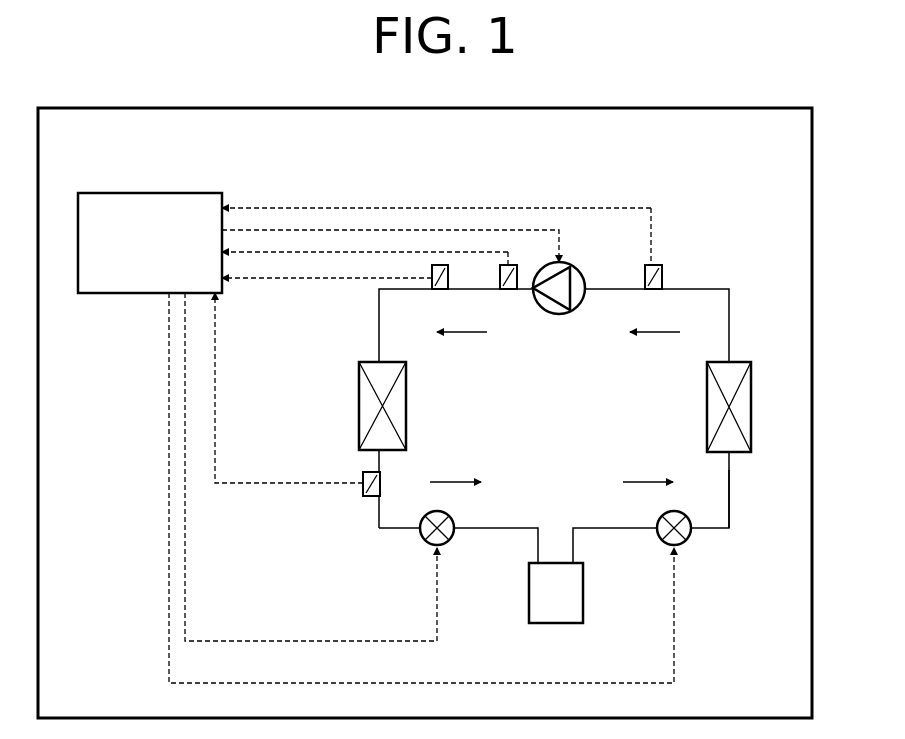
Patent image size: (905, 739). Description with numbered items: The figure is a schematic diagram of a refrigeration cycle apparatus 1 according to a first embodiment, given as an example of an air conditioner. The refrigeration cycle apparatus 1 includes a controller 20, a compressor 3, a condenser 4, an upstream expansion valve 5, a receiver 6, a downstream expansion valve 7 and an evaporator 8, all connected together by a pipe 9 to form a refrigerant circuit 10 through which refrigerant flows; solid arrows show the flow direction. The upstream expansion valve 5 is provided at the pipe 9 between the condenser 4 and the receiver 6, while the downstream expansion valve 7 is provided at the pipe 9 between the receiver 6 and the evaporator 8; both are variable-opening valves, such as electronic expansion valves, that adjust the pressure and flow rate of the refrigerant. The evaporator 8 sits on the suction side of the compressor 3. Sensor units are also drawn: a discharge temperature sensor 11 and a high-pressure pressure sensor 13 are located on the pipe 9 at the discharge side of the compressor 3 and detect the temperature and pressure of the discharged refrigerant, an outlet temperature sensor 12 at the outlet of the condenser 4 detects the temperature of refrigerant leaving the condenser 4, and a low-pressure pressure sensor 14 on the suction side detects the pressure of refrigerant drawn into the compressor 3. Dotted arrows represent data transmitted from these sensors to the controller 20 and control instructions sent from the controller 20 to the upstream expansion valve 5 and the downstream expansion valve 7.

The refrigeration cycle apparatus 1 is at (483, 108).
The controller 20 is at (203, 193).
The compressor 3 is at (570, 265).
The condenser 4 is at (359, 432).
The upstream expansion valve 5 is at (425, 540).
The receiver 6 is at (529, 583).
The downstream expansion valve 7 is at (690, 540).
The evaporator 8 is at (751, 362).
The pipe 9 is at (729, 500).
The refrigerant circuit 10 is at (729, 297).
The discharge temperature sensor 11 is at (517, 275).
The outlet temperature sensor 12 is at (364, 497).
The high-pressure pressure sensor 13 is at (448, 275).
The low-pressure pressure sensor 14 is at (662, 275).